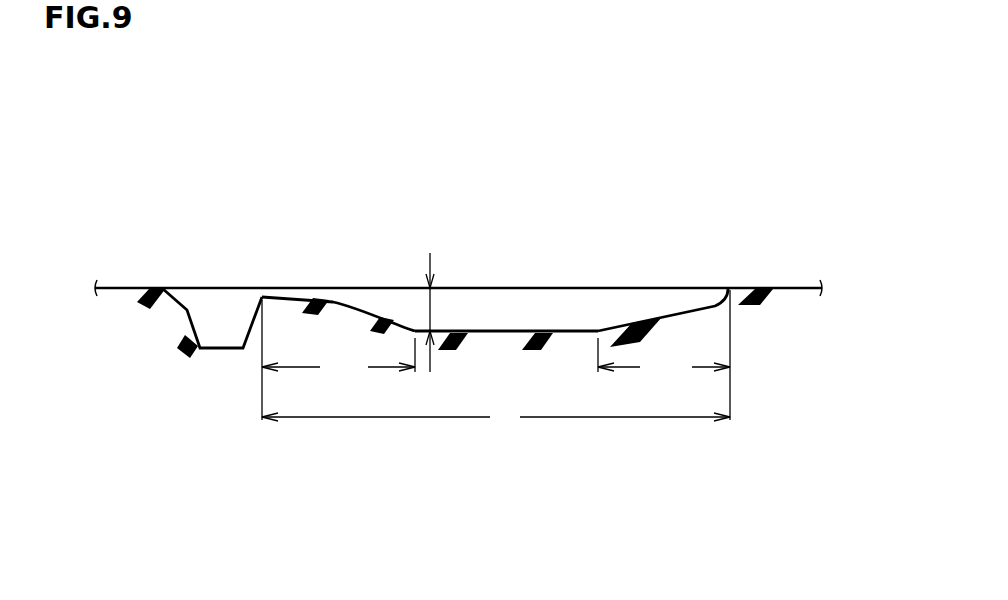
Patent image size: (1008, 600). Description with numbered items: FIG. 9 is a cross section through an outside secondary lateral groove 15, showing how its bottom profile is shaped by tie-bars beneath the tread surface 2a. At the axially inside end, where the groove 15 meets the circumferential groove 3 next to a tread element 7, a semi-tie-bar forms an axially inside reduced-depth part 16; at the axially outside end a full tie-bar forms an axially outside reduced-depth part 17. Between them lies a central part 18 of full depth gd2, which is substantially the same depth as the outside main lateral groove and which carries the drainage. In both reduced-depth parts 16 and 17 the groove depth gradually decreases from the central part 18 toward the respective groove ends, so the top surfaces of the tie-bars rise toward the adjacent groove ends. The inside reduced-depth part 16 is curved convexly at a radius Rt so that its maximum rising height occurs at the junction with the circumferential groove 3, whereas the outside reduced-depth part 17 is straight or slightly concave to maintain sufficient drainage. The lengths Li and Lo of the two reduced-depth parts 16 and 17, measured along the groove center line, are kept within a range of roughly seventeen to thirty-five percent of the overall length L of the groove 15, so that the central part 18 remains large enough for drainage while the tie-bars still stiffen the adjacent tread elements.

The tread surface 2a is at (623, 288).
The circumferential groove 3 is at (221, 296).
The land portion 7 is at (172, 287).
The axially inside reduced-depth part 16 is at (326, 290).
The secondary lateral groove 15 is at (490, 306).
The central part 18 is at (547, 326).
The axially outside reduced-depth part 17 is at (688, 294).
The depth of central part gd2 is at (428, 310).
The length of axially inside reduced-depth part Li is at (338, 360).
The length of axially outside reduced-depth part Lo is at (664, 355).
The overall length of the groove L is at (496, 418).
The radius of convex curve Rt is at (330, 316).